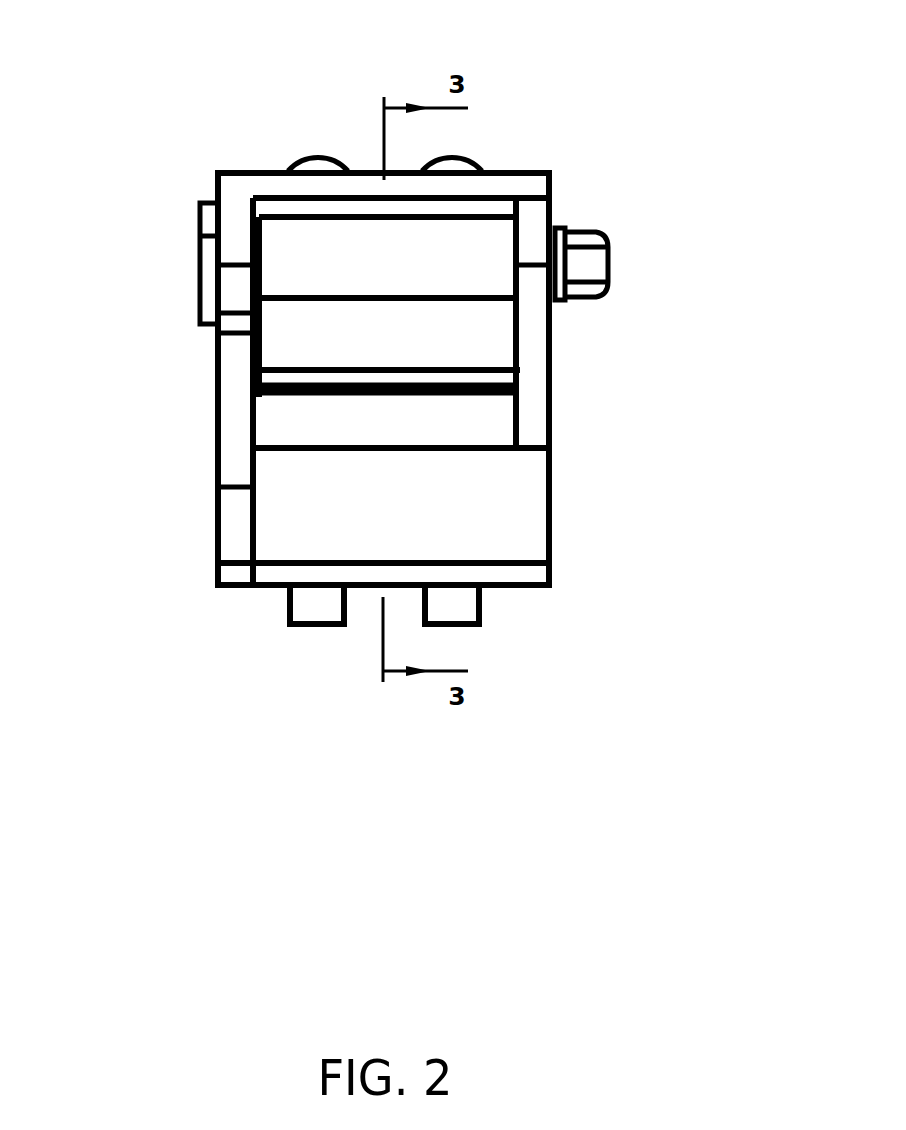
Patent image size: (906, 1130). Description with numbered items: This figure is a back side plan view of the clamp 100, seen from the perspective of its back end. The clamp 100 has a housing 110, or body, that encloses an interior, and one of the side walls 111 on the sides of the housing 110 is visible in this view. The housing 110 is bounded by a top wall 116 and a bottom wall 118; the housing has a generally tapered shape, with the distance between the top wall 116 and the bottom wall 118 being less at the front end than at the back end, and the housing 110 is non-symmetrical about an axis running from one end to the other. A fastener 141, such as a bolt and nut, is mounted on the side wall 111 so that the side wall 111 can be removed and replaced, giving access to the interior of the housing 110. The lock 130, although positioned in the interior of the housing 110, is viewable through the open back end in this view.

The clamp 100 is at (411, 356).
The housing 110 is at (411, 388).
The side wall 111 is at (550, 398).
The top wall 116 is at (508, 170).
The bottom wall 118 is at (513, 590).
The lock 130 is at (257, 345).
The fastener 141 is at (608, 265).